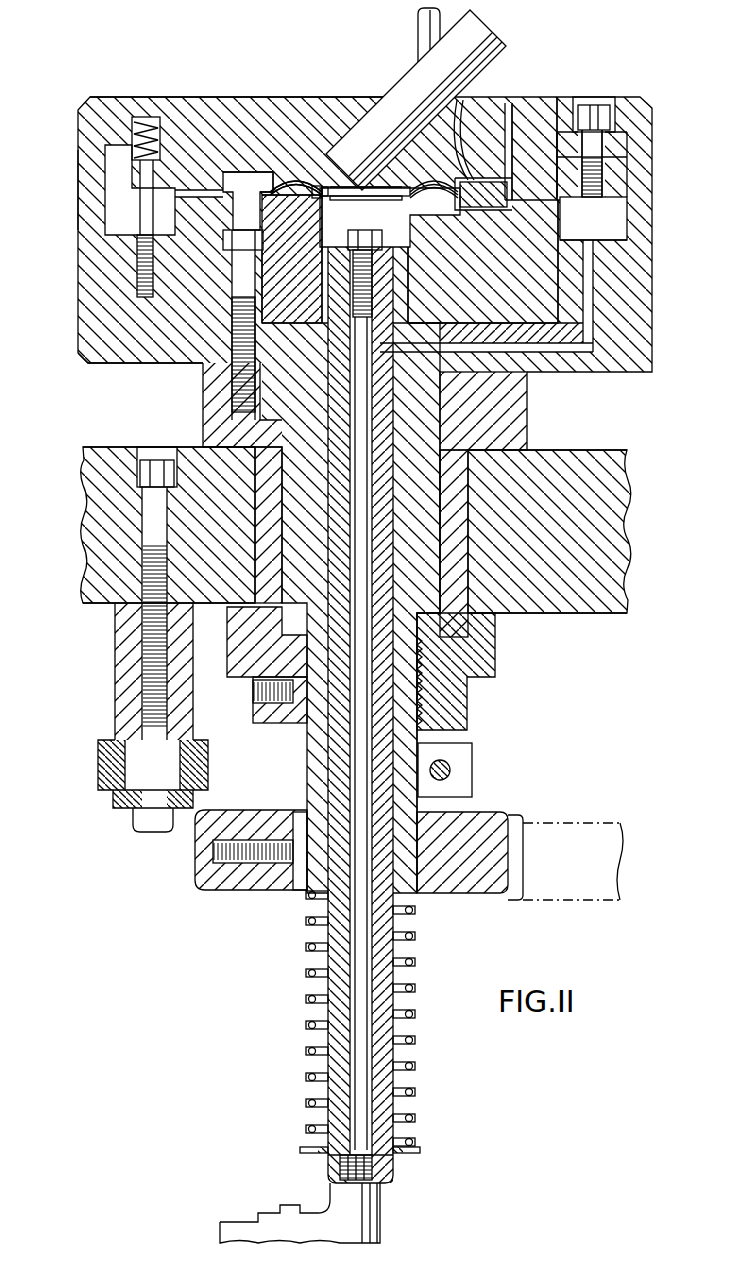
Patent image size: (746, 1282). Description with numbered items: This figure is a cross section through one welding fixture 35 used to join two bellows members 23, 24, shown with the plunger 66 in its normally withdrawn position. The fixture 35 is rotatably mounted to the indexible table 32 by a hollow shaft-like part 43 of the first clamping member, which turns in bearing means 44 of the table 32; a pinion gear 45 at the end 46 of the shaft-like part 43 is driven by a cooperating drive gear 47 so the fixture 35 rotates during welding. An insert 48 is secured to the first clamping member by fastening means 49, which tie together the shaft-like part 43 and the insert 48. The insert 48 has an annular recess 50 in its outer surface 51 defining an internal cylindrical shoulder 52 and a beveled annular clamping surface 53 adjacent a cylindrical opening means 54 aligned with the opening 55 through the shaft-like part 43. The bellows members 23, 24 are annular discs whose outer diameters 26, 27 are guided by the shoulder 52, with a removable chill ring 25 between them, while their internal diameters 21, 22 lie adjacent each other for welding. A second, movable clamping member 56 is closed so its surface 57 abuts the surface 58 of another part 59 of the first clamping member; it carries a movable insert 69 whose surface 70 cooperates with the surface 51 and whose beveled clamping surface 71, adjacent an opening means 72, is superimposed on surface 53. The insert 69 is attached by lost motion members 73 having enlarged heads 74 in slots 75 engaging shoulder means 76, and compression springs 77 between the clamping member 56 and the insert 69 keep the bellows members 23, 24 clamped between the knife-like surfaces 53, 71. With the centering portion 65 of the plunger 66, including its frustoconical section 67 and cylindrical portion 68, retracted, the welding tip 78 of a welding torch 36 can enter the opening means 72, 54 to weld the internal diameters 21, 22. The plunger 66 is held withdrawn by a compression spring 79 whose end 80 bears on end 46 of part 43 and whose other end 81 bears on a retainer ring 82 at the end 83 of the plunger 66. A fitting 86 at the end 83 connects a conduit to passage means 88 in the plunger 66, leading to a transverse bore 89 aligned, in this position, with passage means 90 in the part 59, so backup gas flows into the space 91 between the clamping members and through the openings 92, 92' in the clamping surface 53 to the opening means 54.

The internal diameter 21 is at (367, 228).
The internal diameter 22 is at (388, 196).
The bellows member 23 is at (310, 185).
The bellows member 24 is at (462, 210).
The chill ring 25 is at (270, 190).
The outer diameter 26 is at (282, 186).
The outer diameter 27 is at (312, 198).
The indexible member 32 is at (622, 540).
The fixture 35 is at (662, 61).
The welding torch 36 is at (414, 43).
The hollow shaft-like part 43 is at (440, 410).
The bearing means 44 is at (463, 583).
The pinion gear 45 is at (492, 818).
The end 46 is at (400, 887).
The drive gear 47 is at (580, 908).
The insert 48 is at (543, 226).
The fastening means 49 is at (233, 373).
The annular recess 50 is at (318, 185).
The outer surface 51 is at (514, 125).
The annular internal cylindrical shoulder 52 is at (462, 140).
The annular beveled clamping surface 53 is at (322, 232).
The cylindrical opening means 54 is at (418, 238).
The cylindrical opening 55 is at (392, 494).
The second clamping member 56 is at (640, 125).
The surface 57 is at (78, 180).
The surface 58 is at (90, 160).
The part 59 is at (92, 340).
The centering portion 65 is at (396, 281).
The plunger 66 is at (395, 447).
The frustoconical section 67 is at (318, 270).
The cylindrical portion 68 is at (318, 300).
The movable insert 69 is at (205, 105).
The surface 70 is at (165, 195).
The beveled annular clamping surface 71 is at (322, 186).
The opening means 72 is at (330, 187).
The lost motion member 73 is at (605, 143).
The enlarged head 74 is at (595, 115).
The slot 75 is at (614, 112).
The shoulder means 76 is at (573, 146).
The compression springs 77 is at (135, 130).
The welding tip 78 is at (352, 145).
The compression spring 79 is at (308, 1049).
The end 80 is at (305, 893).
The end 81 is at (400, 1138).
The retainer ring 82 is at (412, 1150).
The end 83 is at (380, 1172).
The fitting 86 is at (380, 1222).
The passage means 88 is at (374, 1003).
The transverse bore 89 is at (383, 355).
The passage means 90 is at (553, 360).
The space 91 is at (610, 231).
The openings 92 is at (364, 213).
The diaphragm portion 92' is at (437, 170).